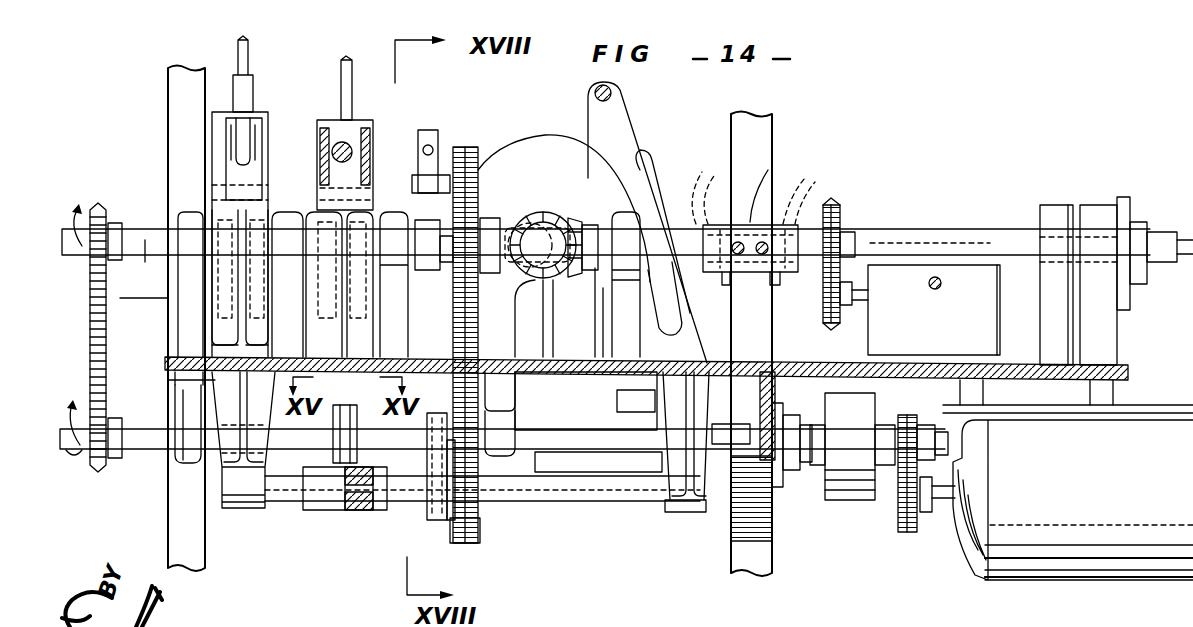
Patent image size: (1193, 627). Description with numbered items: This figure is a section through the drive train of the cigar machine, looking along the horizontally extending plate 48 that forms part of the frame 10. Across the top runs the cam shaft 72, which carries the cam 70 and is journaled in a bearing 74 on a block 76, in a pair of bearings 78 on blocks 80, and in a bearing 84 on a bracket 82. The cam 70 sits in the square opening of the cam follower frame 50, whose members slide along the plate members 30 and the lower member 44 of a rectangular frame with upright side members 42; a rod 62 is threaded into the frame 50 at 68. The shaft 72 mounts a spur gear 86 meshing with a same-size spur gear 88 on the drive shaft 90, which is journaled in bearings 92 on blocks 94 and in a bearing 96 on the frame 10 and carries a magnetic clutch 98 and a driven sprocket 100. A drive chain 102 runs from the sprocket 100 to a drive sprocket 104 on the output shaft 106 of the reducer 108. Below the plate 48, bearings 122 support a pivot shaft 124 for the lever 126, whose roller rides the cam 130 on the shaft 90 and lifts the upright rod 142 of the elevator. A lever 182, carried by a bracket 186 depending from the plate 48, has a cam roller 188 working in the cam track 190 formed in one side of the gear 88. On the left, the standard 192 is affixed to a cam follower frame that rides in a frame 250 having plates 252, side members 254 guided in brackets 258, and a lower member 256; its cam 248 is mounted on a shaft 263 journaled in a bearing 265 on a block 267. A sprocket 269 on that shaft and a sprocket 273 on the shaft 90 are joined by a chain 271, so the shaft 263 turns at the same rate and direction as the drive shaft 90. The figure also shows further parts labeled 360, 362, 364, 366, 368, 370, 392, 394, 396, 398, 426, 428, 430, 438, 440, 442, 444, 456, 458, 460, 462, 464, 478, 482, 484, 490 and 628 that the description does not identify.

The frame 10 is at (187, 548).
The plate member 30 is at (343, 166).
The upright side member 42 is at (364, 212).
The lower member 44 is at (339, 284).
The plate 48 is at (168, 362).
The cam follower frame 50 is at (333, 140).
The rod 62 is at (352, 145).
The threaded connection 68 is at (346, 148).
The cam 70 is at (320, 193).
The cam shaft 72 is at (1005, 240).
The bearing 74 is at (280, 210).
The block 76 is at (287, 284).
The bearing 78 is at (510, 284).
The block 80 is at (511, 297).
The bracket 82 is at (1093, 333).
The bearing 84 is at (1125, 207).
The spur gear 86 is at (465, 147).
The spur gear 88 is at (466, 543).
The drive shaft 90 is at (568, 432).
The bearing 92 is at (180, 468).
The block 94 is at (178, 383).
The bearing 96 is at (787, 472).
The magnetic clutch 98 is at (849, 472).
The driven sprocket 100 is at (908, 414).
The drive chain 102 is at (897, 470).
The drive sprocket 104 is at (911, 540).
The output shaft 106 is at (940, 505).
The reducer 108 is at (1068, 480).
The bearing 122 is at (240, 492).
The pivot shaft 124 is at (600, 480).
The lever 126 is at (322, 490).
The cam 130 is at (355, 438).
The upright rod 142 is at (341, 68).
The lever 182 is at (432, 520).
The bracket 186 is at (503, 391).
The cam roller 188 is at (478, 495).
The cam track 190 is at (470, 468).
The standard 192 is at (235, 47).
The cam 248 is at (232, 175).
The frame 250 is at (232, 128).
The plate 252 is at (232, 140).
The side member 254 is at (262, 148).
The lower member 256 is at (212, 318).
The bracket 258 is at (238, 338).
The shaft 263 is at (99, 206).
The bearing 265 is at (233, 228).
The block 267 is at (182, 296).
The sprocket 269 is at (68, 203).
The chain 271 is at (88, 312).
The sprocket 273 is at (92, 468).
The pivot pin 360 is at (942, 284).
The bracket wall 362 is at (985, 335).
The arm 364 is at (866, 270).
The housing box 366 is at (840, 350).
The hub 368 is at (822, 272).
The gear 370 is at (832, 198).
The bearing 392 is at (773, 390).
The rod 394 is at (760, 205).
The block 396 is at (731, 434).
The spring 398 is at (790, 222).
The slot 426 is at (735, 328).
The clamp block 428 is at (740, 225).
The spring 430 is at (703, 222).
The pivot 438 is at (596, 90).
The lever 440 is at (650, 100).
The block 442 is at (655, 412).
The plate 444 is at (655, 410).
The cam disk 456 is at (525, 145).
The hub 458 is at (512, 215).
The bracket 460 is at (530, 316).
The gear 462 is at (540, 212).
The bevel gear 464 is at (572, 222).
The bracket 478 is at (428, 130).
The hub 482 is at (478, 190).
The arm 484 is at (412, 180).
The hub 490 is at (450, 215).
The bearing 628 is at (368, 520).